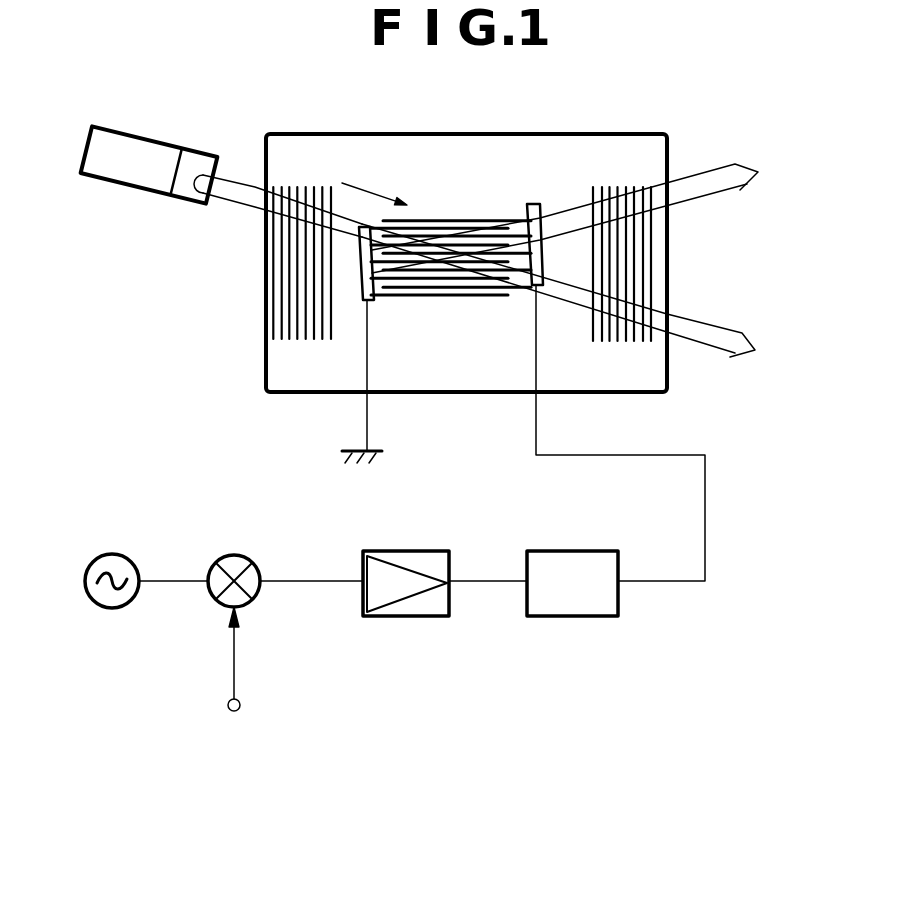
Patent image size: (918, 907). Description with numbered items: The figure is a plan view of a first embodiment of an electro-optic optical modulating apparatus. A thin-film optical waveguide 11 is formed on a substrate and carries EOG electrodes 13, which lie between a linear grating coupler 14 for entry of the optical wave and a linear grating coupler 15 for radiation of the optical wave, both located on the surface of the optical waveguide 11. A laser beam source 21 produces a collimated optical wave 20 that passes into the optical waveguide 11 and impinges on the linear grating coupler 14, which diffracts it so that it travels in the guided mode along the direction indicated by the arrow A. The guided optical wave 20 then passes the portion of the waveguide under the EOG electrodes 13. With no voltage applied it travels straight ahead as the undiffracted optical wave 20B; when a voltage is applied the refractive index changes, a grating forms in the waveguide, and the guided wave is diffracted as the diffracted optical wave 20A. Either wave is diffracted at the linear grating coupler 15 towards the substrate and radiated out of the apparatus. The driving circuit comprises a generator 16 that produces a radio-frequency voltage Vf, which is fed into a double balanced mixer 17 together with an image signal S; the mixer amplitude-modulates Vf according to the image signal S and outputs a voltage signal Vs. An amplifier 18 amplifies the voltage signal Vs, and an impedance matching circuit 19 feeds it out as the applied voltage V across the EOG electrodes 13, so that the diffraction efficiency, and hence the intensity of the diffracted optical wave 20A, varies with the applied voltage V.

The thin-film optical waveguide 11 is at (315, 378).
The EOG electrodes 13 is at (473, 222).
The linear grating coupler for entry of the optical wave 14 is at (280, 305).
The linear grating coupler for radiation of the optical wave 15 is at (637, 253).
The generator 16 is at (132, 553).
The double balanced mixer 17 is at (258, 562).
The amplifier 18 is at (417, 550).
The impedance matching circuit 19 is at (585, 550).
The optical wave 20 is at (235, 202).
The diffracted optical wave 20A is at (710, 172).
The undiffracted optical wave 20B is at (718, 337).
The laser beam source 21 is at (170, 143).
The arrow indicating direction of guided travel A is at (374, 184).
The applied voltage V is at (706, 523).
The radio-frequency voltage Vf is at (173, 583).
The voltage signal Vs is at (317, 583).
The image signal S is at (233, 676).